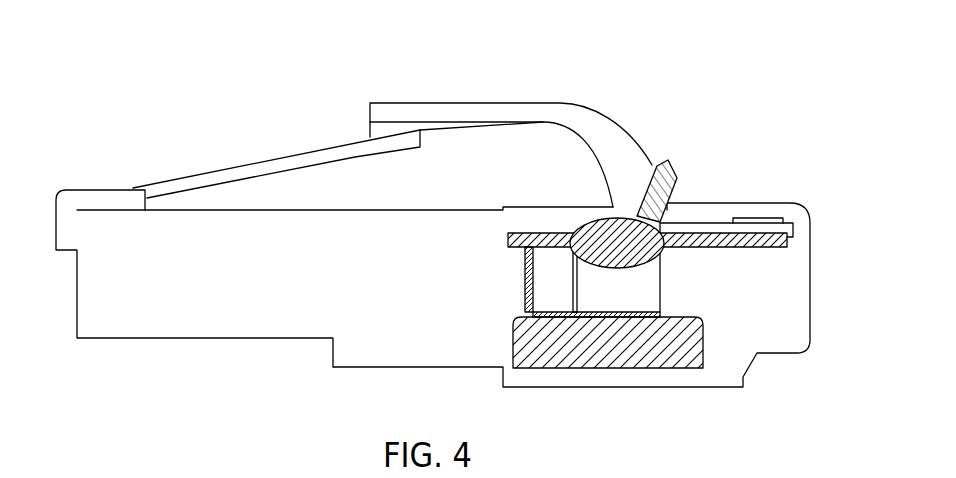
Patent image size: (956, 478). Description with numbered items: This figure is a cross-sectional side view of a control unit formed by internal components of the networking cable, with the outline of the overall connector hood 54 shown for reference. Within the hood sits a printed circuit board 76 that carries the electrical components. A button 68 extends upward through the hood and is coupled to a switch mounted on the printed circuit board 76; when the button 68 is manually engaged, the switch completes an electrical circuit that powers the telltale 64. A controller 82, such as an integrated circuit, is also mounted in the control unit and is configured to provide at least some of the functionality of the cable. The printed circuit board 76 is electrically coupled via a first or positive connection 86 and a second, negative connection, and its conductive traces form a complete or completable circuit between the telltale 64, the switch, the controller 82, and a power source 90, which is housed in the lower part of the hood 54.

The connector assembly or hood 54 is at (208, 95).
The telltale 64 is at (747, 220).
The button 68 is at (665, 166).
The printed circuit board 76 is at (748, 239).
The controller 82 is at (610, 260).
The first or positive connection 86 is at (642, 292).
The power source 90 is at (553, 353).